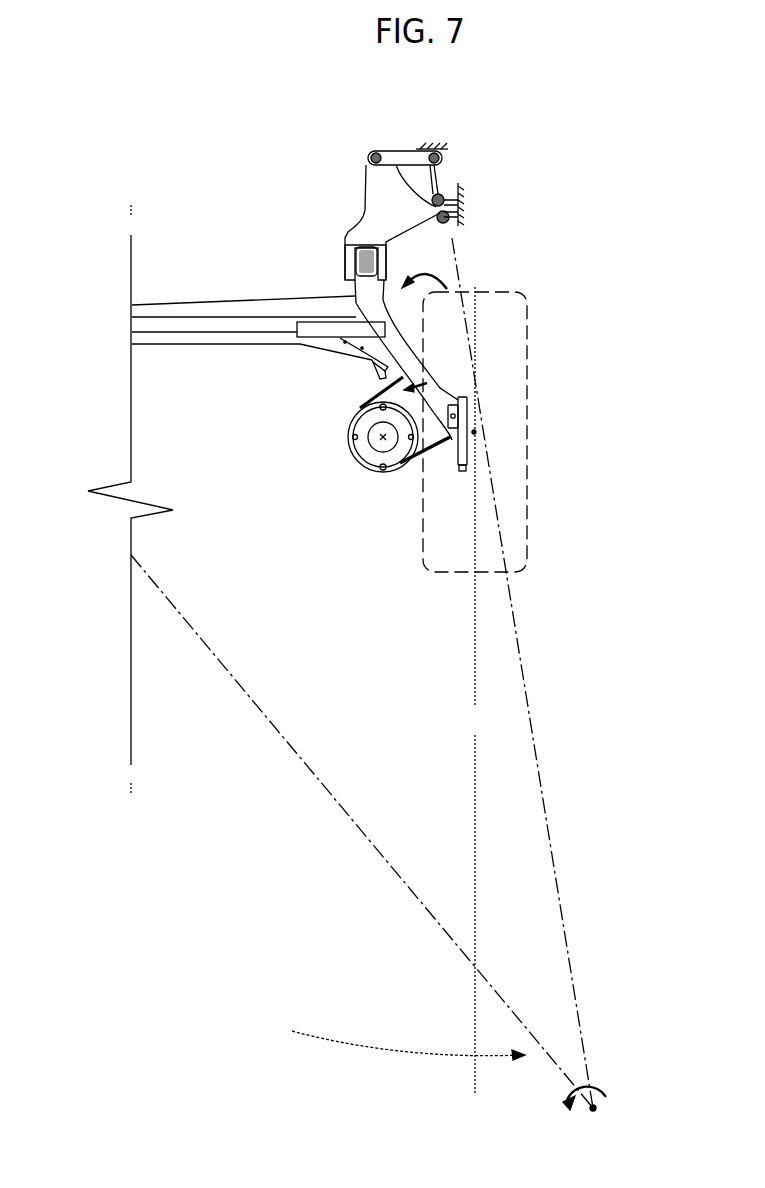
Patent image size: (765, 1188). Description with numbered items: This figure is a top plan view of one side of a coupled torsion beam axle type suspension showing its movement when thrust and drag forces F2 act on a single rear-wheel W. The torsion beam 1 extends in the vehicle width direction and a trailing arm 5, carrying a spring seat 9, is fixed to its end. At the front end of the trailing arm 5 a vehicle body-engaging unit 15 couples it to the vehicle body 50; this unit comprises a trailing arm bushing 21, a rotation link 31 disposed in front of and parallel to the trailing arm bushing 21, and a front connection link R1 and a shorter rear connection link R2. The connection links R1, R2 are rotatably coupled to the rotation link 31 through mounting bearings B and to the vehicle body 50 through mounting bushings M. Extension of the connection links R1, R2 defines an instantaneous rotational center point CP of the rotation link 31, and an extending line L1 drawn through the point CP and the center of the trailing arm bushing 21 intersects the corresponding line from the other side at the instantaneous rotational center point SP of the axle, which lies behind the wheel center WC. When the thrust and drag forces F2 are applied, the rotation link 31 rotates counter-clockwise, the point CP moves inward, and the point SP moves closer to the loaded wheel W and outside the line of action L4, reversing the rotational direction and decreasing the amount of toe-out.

The torsion beam 1 is at (160, 345).
The trailing arm 5 is at (380, 378).
The spring seat 9 is at (358, 448).
The vehicle body-engaging unit 15 is at (522, 158).
The trailing arm bushing 21 is at (352, 258).
The rotation link 31 is at (372, 208).
The vehicle body 50 is at (438, 145).
The mounting bearing B is at (368, 157).
The instantaneous rotational center point of rotation link CP is at (444, 161).
The mounting bushing M is at (450, 150).
The front connection link R1 is at (417, 148).
The rear connection link R2 is at (470, 214).
The thrust and drag forces F2 is at (476, 252).
The rear-wheel W is at (447, 574).
The wheel center WC is at (476, 432).
The extending line L1 is at (535, 750).
The line of action L4 is at (477, 841).
The instantaneous rotational center point of CTBA SP is at (462, 1076).